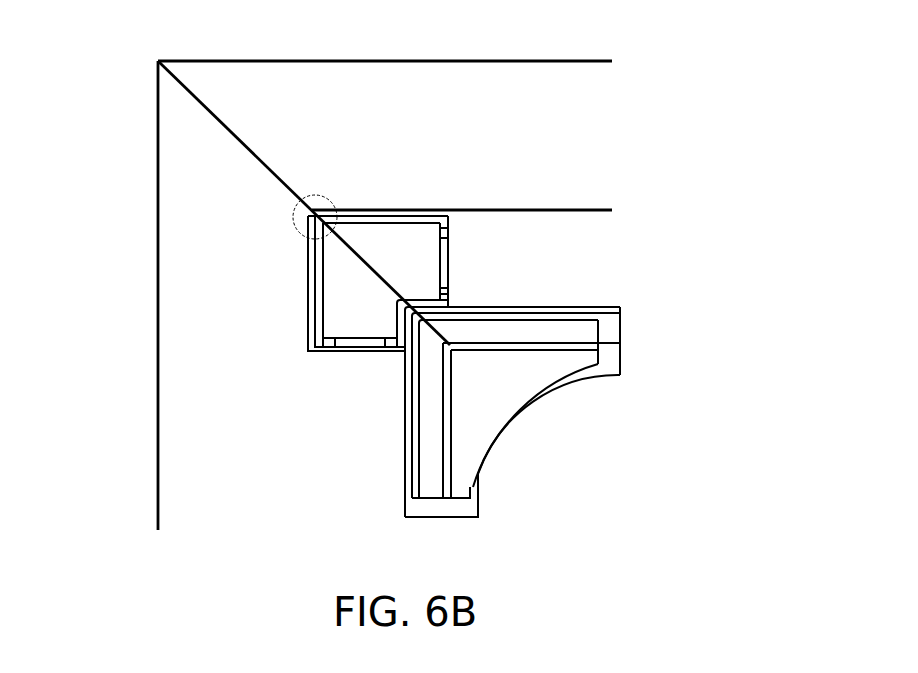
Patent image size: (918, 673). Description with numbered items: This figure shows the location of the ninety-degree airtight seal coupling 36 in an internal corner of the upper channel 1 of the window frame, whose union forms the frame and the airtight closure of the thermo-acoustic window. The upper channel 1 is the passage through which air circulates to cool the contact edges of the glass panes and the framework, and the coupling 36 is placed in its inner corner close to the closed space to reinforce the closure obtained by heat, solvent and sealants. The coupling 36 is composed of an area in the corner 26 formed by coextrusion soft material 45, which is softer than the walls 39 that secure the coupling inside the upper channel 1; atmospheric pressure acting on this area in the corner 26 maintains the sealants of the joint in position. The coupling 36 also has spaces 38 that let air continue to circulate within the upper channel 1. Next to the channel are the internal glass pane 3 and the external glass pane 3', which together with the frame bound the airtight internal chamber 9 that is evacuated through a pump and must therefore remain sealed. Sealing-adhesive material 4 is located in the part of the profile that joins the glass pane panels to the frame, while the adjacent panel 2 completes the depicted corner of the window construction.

The upper channel 1 is at (578, 233).
The second panel 2 is at (578, 131).
The internal glass pane 3 is at (512, 412).
The external glass pane 3' is at (565, 358).
The sealing-adhesive material 4 is at (613, 328).
The airtight internal chamber 9 is at (553, 410).
The area in the corner 26 is at (297, 204).
The 90° airtight seal coupling 36 is at (385, 208).
The spaces 38 is at (450, 262).
The walls 39 is at (420, 207).
The coextrusion soft material 45 is at (296, 217).